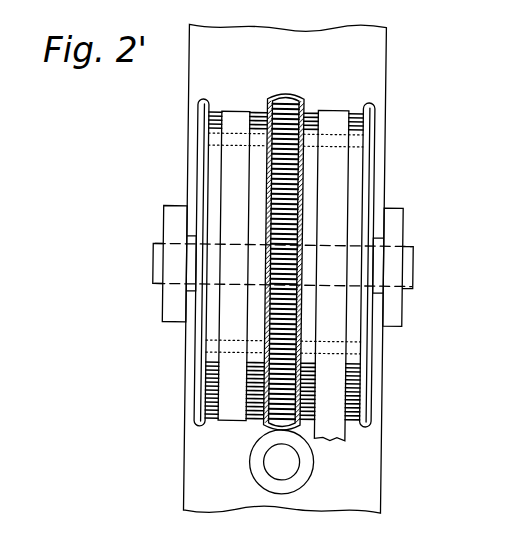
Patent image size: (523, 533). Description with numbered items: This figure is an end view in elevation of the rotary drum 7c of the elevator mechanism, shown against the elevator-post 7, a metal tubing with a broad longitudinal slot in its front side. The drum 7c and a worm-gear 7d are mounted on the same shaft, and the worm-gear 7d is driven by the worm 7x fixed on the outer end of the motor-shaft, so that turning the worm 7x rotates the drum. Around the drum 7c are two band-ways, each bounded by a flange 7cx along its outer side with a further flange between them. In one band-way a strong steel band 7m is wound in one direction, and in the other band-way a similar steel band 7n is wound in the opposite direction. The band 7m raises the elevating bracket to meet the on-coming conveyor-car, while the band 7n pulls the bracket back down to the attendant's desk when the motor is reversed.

The elevator-post 7 is at (375, 77).
The rotary drum 7c is at (313, 163).
The collar flange 7cx is at (206, 117).
The worm-gear 7d is at (276, 93).
The steel band 7m is at (228, 155).
The steel band 7n is at (337, 192).
The worm 7x is at (303, 462).